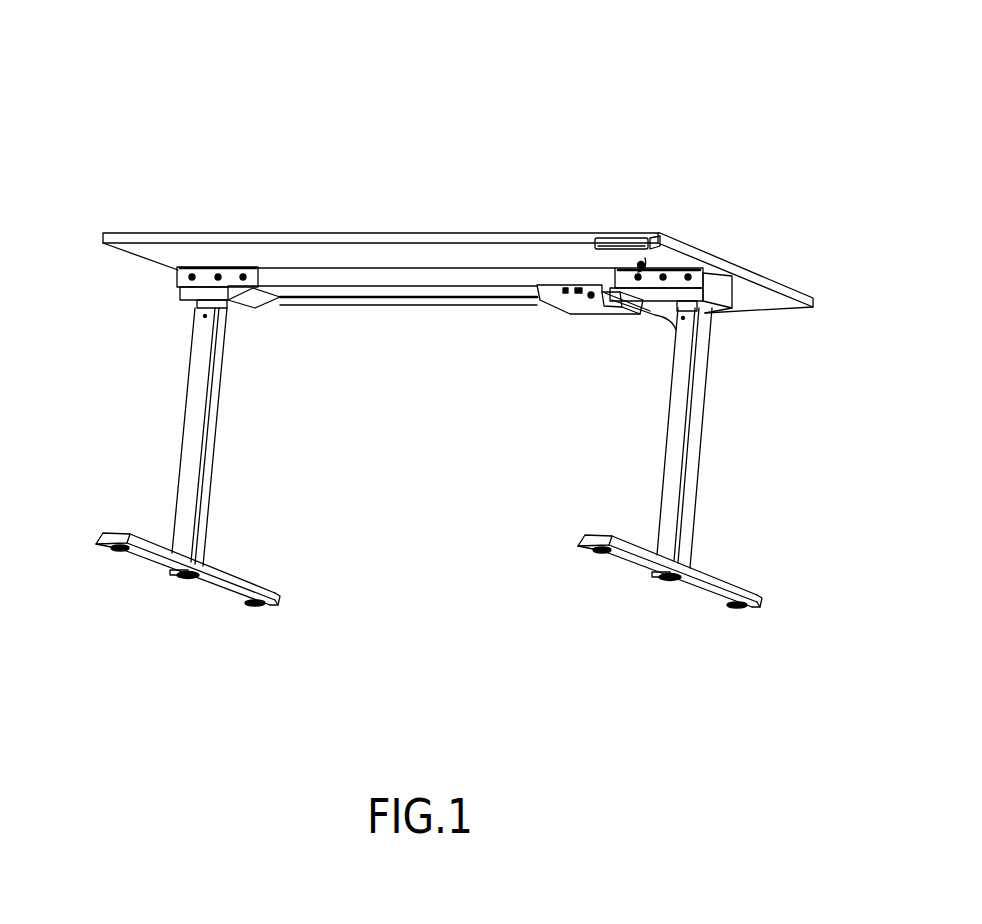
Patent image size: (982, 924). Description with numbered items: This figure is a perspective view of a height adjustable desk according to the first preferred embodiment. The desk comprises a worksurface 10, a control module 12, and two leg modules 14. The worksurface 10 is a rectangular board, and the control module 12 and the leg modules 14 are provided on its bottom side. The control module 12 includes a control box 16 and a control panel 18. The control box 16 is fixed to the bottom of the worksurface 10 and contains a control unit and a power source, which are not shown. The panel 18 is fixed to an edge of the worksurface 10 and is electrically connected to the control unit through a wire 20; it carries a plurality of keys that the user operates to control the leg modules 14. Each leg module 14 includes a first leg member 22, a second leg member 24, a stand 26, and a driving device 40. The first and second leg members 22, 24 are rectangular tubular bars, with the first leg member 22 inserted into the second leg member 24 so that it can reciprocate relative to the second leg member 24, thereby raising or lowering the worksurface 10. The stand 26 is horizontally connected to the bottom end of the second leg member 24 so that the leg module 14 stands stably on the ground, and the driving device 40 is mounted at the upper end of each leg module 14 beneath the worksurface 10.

The worksurface 10 is at (400, 238).
The control module 12 is at (522, 430).
The leg module 14 is at (448, 434).
The control box 16 is at (580, 307).
The control panel 18 is at (640, 253).
The wire 20 is at (645, 262).
The first leg member 22 is at (193, 307).
The second leg member 24 is at (188, 455).
The stand 26 is at (237, 577).
The driving device 40 is at (178, 291).